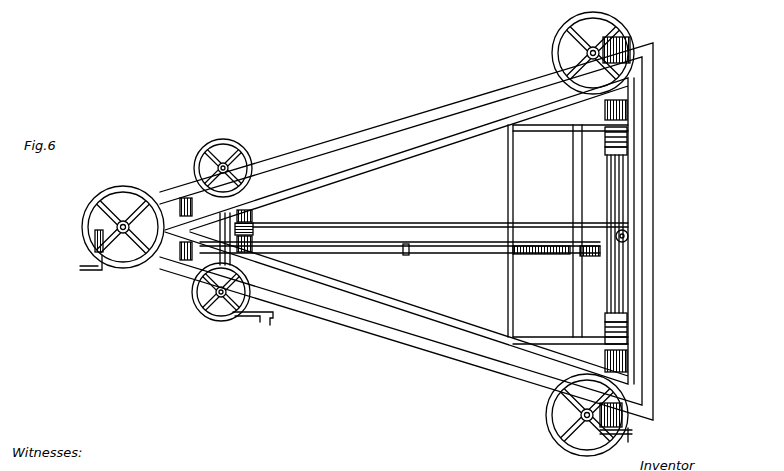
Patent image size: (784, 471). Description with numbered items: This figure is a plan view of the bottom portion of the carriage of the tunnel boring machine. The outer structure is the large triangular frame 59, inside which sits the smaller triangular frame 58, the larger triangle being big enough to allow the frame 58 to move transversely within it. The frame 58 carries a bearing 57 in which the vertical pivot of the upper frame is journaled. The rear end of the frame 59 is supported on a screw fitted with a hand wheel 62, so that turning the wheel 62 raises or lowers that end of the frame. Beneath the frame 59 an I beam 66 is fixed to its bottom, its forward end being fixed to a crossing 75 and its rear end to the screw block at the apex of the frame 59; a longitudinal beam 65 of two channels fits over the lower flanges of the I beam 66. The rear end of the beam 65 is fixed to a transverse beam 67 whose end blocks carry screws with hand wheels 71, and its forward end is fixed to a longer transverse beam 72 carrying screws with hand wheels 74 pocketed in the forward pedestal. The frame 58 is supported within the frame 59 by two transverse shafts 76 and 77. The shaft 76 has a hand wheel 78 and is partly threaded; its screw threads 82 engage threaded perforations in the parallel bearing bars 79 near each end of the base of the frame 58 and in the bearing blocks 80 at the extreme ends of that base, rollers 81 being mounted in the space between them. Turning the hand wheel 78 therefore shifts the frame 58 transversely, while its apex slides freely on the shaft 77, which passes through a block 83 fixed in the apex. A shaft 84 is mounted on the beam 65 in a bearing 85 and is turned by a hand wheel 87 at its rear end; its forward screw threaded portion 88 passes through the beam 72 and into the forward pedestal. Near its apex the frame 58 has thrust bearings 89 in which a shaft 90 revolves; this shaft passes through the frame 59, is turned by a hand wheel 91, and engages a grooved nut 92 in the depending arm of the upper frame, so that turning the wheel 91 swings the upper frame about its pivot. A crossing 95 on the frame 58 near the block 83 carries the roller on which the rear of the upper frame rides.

The bearing 57 is at (630, 237).
The frame 58 is at (436, 152).
The triangular frame 59 is at (363, 137).
The hand wheel 62 is at (118, 190).
The beam 65 is at (537, 226).
The I beam 66 is at (440, 231).
The transversely extending beam 67 is at (200, 158).
The hand wheels 71 is at (246, 152).
The transversely disposed beam 72 is at (579, 52).
The hand wheels 74 is at (553, 33).
The crossing 75 is at (509, 166).
The shaft 76 is at (628, 188).
The shaft 77 is at (193, 228).
The hand wheel 78 is at (633, 439).
The bearing bars 79 is at (560, 126).
The bearing blocks 80 is at (630, 97).
The rollers 81 is at (630, 113).
The screw threads 82 is at (606, 111).
The block 83 is at (213, 239).
The shaft 84 is at (463, 253).
The bearing 85 is at (406, 255).
The hand wheel 87 is at (100, 266).
The screw threaded portion 88 is at (566, 254).
The thrust bearings 89 is at (250, 214).
The shaft 90 is at (246, 268).
The hand wheel 91 is at (262, 318).
The grooved nut 92 is at (250, 229).
The crossing 95 is at (239, 211).